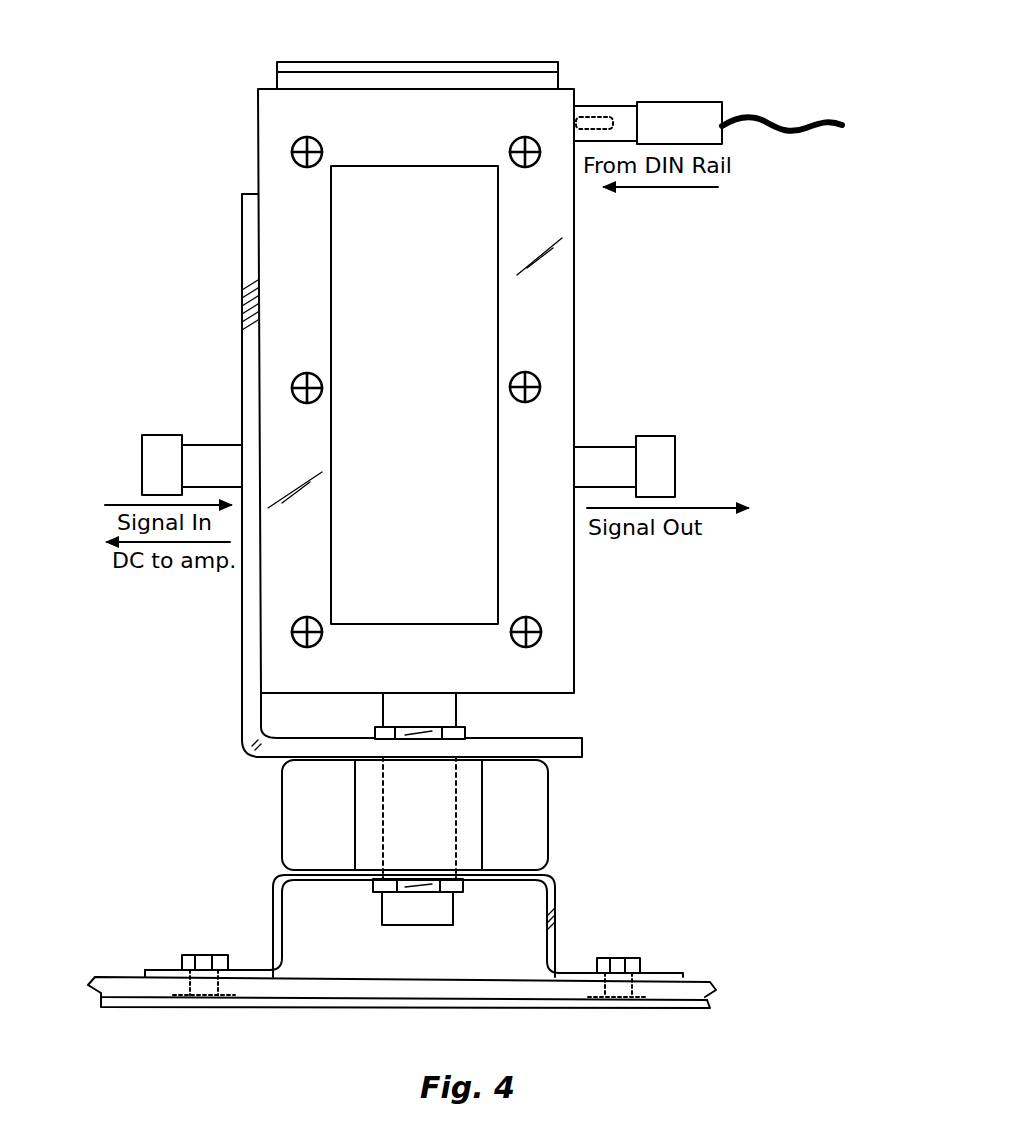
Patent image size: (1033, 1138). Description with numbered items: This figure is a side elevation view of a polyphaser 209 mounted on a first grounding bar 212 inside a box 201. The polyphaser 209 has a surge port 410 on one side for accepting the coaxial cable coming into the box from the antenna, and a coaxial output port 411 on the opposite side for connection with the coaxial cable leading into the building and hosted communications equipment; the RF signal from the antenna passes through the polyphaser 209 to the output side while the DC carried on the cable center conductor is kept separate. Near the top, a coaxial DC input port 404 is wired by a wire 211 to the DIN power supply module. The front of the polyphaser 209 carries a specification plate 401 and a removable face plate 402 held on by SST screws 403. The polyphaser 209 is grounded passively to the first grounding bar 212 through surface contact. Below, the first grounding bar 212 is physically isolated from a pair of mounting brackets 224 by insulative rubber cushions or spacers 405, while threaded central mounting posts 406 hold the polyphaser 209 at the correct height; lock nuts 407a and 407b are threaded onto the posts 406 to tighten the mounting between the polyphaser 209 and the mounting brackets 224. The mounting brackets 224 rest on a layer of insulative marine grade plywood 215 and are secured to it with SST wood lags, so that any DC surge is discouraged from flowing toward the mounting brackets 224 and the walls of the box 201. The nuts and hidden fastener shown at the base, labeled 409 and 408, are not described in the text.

The box 201 is at (710, 1005).
The polyphaser 209 is at (258, 163).
The wire 211 is at (790, 128).
The first grounding bar 212 is at (242, 362).
The marine grade plywood 215 is at (127, 977).
The mounting brackets 224 is at (558, 935).
The specification plate 401 is at (331, 287).
The removable face plate 402 is at (523, 347).
The SST screws 403 is at (541, 635).
The coaxial DC input port 404 is at (653, 102).
The insulative rubber cushions or spacers 405 is at (282, 832).
The threaded central mounting posts 406 is at (455, 827).
The lock nut 407a is at (465, 733).
The lock nut 407b is at (463, 885).
The hidden nut 408 is at (237, 997).
The nut 409 is at (205, 955).
The surge port 410 is at (218, 445).
The coaxial output port 411 is at (603, 447).